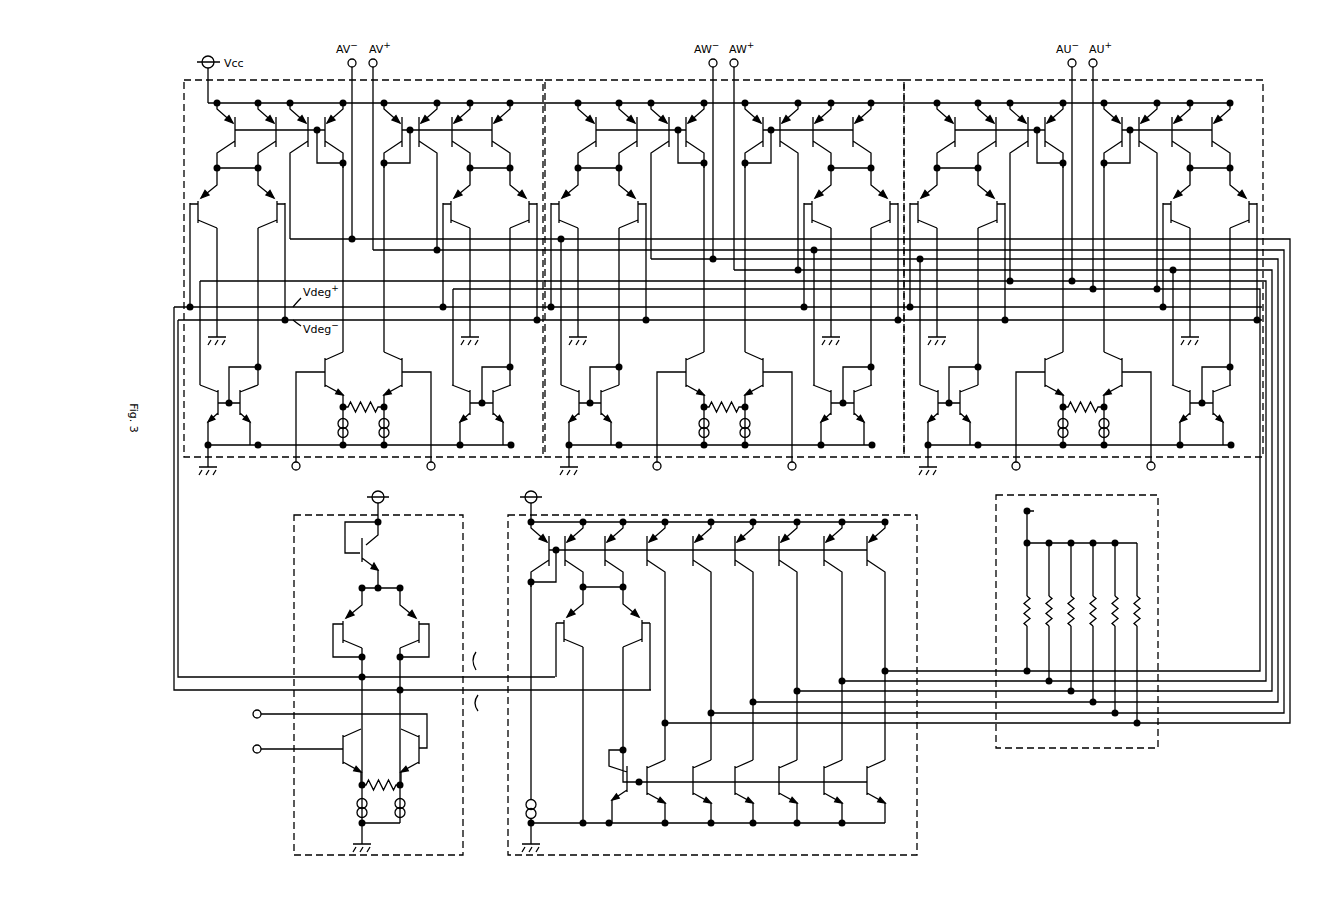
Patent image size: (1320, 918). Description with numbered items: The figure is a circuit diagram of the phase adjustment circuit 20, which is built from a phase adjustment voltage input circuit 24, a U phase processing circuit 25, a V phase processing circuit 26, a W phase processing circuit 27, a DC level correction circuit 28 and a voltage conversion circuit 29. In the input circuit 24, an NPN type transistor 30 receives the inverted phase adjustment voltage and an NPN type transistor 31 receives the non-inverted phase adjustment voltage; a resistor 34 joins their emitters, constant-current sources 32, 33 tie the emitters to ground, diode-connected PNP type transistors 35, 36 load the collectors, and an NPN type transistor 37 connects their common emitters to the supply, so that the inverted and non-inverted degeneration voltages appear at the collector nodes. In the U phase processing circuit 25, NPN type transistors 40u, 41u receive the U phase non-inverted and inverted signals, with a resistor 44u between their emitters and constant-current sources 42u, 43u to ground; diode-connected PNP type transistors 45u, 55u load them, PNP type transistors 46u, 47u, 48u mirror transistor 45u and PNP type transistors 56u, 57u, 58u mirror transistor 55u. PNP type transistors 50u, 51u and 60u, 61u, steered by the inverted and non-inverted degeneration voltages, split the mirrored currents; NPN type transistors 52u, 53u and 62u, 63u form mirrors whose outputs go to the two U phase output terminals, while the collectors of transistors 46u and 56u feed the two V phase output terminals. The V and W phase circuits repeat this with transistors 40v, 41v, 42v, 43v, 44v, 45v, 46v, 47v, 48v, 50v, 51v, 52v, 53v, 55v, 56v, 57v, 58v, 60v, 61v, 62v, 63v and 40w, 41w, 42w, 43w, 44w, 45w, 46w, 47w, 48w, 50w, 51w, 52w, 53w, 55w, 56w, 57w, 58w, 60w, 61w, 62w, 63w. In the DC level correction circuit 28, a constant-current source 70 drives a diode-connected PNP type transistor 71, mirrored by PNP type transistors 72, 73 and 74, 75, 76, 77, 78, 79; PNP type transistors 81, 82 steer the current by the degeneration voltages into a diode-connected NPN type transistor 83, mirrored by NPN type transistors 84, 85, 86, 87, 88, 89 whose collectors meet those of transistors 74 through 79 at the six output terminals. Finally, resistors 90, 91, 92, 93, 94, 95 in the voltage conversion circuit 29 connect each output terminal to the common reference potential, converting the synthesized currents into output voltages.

The phase adjustment circuit 20 is at (722, 22).
The phase adjustment voltage input circuit 24 is at (455, 535).
The U phase processing circuit 25 is at (481, 79).
The V phase processing circuit 26 is at (724, 271).
The W phase processing circuit 27 is at (1083, 271).
The DC level correction circuit 28 is at (920, 526).
The voltage conversion circuit 29 is at (1158, 512).
The NPN type transistor 30 is at (348, 777).
The NPN type transistor 31 is at (414, 777).
The constant-current source 32 is at (353, 812).
The constant-current source 33 is at (409, 812).
The resistor 34 is at (380, 765).
The PNP type transistor 35 is at (344, 600).
The PNP type transistor 36 is at (417, 600).
The NPN type transistor 37 is at (386, 553).
The NPN type transistor 40u is at (329, 394).
The NPN type transistor 41u is at (398, 394).
The constant-current source 42u is at (337, 430).
The constant-current source 43u is at (389, 430).
The resistor 44u is at (361, 384).
The PNP type transistor 45u is at (330, 155).
The PNP type transistor 46u is at (312, 110).
The PNP type transistor 47u is at (274, 110).
The PNP type transistor 48u is at (232, 110).
The PNP type transistor 50u is at (268, 224).
The PNP type transistor 51u is at (209, 224).
The NPN type transistor 52u is at (252, 406).
The NPN type transistor 53u is at (202, 383).
The PNP type transistor 55u is at (396, 155).
The PNP type transistor 56u is at (429, 110).
The PNP type transistor 57u is at (470, 110).
The PNP type transistor 58u is at (511, 110).
The PNP type transistor 60u is at (522, 210).
The PNP type transistor 61u is at (456, 208).
The NPN type transistor 62u is at (504, 406).
The NPN type transistor 63u is at (456, 383).
The NPN type transistor 40v is at (678, 411).
The NPN type transistor 41v is at (770, 411).
The constant-current source 42v is at (685, 430).
The constant-current source 43v is at (764, 430).
The resistor 44v is at (724, 385).
The PNP type transistor 45v is at (691, 143).
The PNP type transistor 46v is at (672, 126).
The PNP type transistor 47v is at (636, 126).
The PNP type transistor 48v is at (594, 126).
The PNP type transistor 50v is at (632, 276).
The PNP type transistor 51v is at (569, 256).
The NPN type transistor 52v is at (624, 415).
The NPN type transistor 53v is at (574, 399).
The PNP type transistor 55v is at (758, 143).
The PNP type transistor 56v is at (783, 126).
The PNP type transistor 57v is at (820, 126).
The PNP type transistor 58v is at (861, 126).
The PNP type transistor 60v is at (867, 276).
The PNP type transistor 61v is at (830, 256).
The NPN type transistor 62v is at (877, 415).
The NPN type transistor 63v is at (827, 399).
The NPN type transistor 40w is at (1037, 411).
The NPN type transistor 41w is at (1129, 411).
The constant-current source 42w is at (1044, 430).
The constant-current source 43w is at (1124, 430).
The resistor 44w is at (1083, 385).
The PNP type transistor 45w is at (1050, 143).
The PNP type transistor 46w is at (1032, 126).
The PNP type transistor 47w is at (996, 126).
The PNP type transistor 48w is at (954, 126).
The PNP type transistor 50w is at (991, 276).
The PNP type transistor 51w is at (928, 256).
The NPN type transistor 52w is at (984, 415).
The NPN type transistor 53w is at (934, 399).
The PNP type transistor 55w is at (1118, 143).
The PNP type transistor 56w is at (1142, 126).
The PNP type transistor 57w is at (1179, 126).
The PNP type transistor 58w is at (1220, 126).
The PNP type transistor 60w is at (1226, 276).
The PNP type transistor 61w is at (1190, 256).
The NPN type transistor 62w is at (1237, 415).
The NPN type transistor 63w is at (1187, 399).
The constant-current source 70 is at (540, 808).
The PNP type transistor 71 is at (541, 572).
The PNP type transistor 72 is at (582, 557).
The PNP type transistor 73 is at (624, 557).
The PNP type transistor 74 is at (665, 557).
The PNP type transistor 75 is at (710, 557).
The PNP type transistor 76 is at (752, 557).
The PNP type transistor 77 is at (796, 557).
The PNP type transistor 78 is at (841, 557).
The PNP type transistor 79 is at (883, 557).
The PNP type transistor 81 is at (568, 652).
The PNP type transistor 82 is at (636, 652).
The NPN type transistor 83 is at (618, 747).
The NPN type transistor 84 is at (660, 764).
The NPN type transistor 85 is at (703, 764).
The NPN type transistor 86 is at (747, 764).
The NPN type transistor 87 is at (789, 764).
The NPN type transistor 88 is at (833, 764).
The NPN type transistor 89 is at (877, 764).
The resistor 90 is at (1024, 624).
The resistor 91 is at (1046, 624).
The resistor 92 is at (1068, 624).
The resistor 93 is at (1090, 624).
The resistor 94 is at (1112, 624).
The resistor 95 is at (1134, 624).